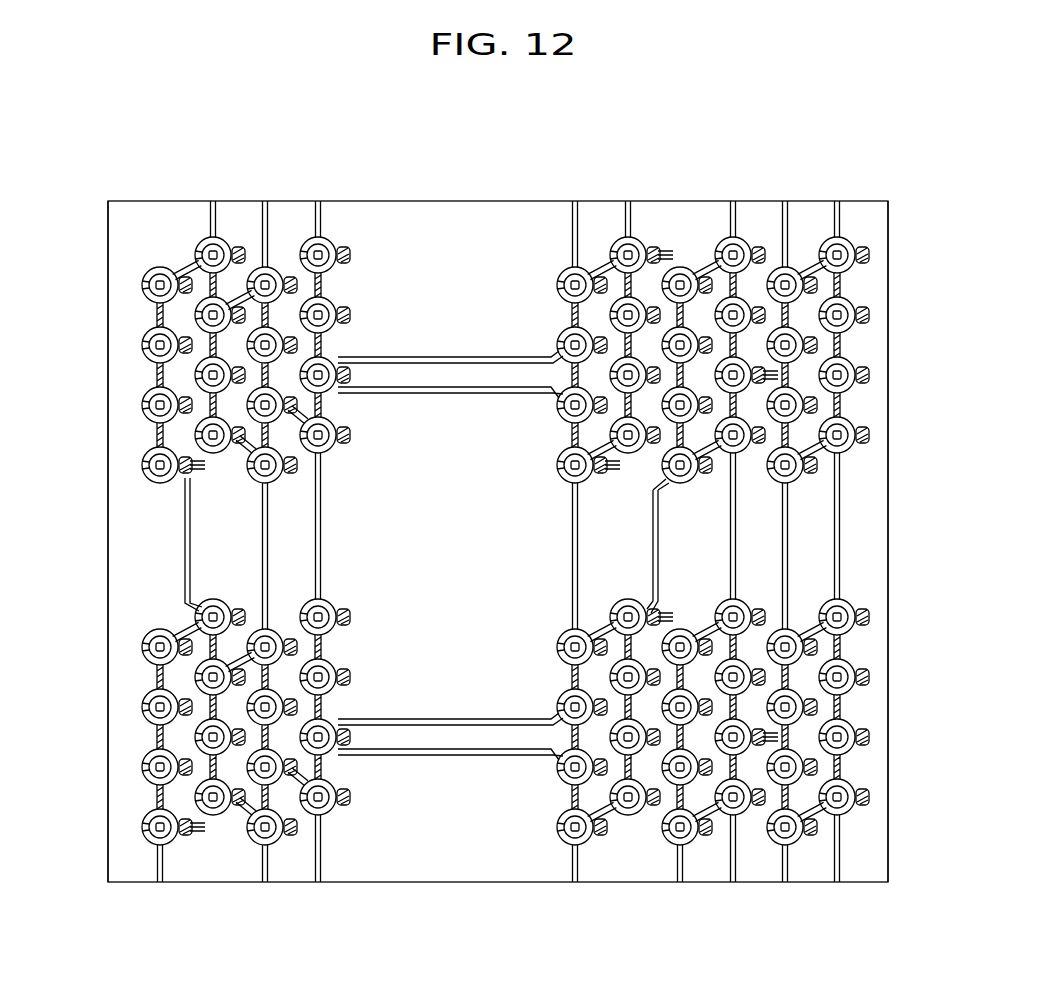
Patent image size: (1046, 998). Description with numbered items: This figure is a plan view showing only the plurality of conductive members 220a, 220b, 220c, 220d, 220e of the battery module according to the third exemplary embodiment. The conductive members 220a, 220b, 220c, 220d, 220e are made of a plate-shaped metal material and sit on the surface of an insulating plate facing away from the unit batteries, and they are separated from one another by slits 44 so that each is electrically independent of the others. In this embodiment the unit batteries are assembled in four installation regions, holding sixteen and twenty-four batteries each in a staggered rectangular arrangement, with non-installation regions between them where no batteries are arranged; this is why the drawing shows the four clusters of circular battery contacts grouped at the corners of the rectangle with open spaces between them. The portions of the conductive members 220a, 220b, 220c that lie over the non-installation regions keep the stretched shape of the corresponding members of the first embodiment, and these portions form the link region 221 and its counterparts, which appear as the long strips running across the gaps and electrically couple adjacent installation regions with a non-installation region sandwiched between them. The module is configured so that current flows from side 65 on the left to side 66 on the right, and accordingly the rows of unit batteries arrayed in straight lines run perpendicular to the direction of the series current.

The conductive member 220a is at (157, 201).
The conductive member 220b is at (245, 201).
The conductive member 220c is at (300, 201).
The conductive member 220d is at (437, 201).
The conductive member 220e is at (598, 201).
The slit 44 is at (579, 900).
The side 65 is at (108, 527).
The side 66 is at (889, 518).
The link region 221 is at (138, 566).